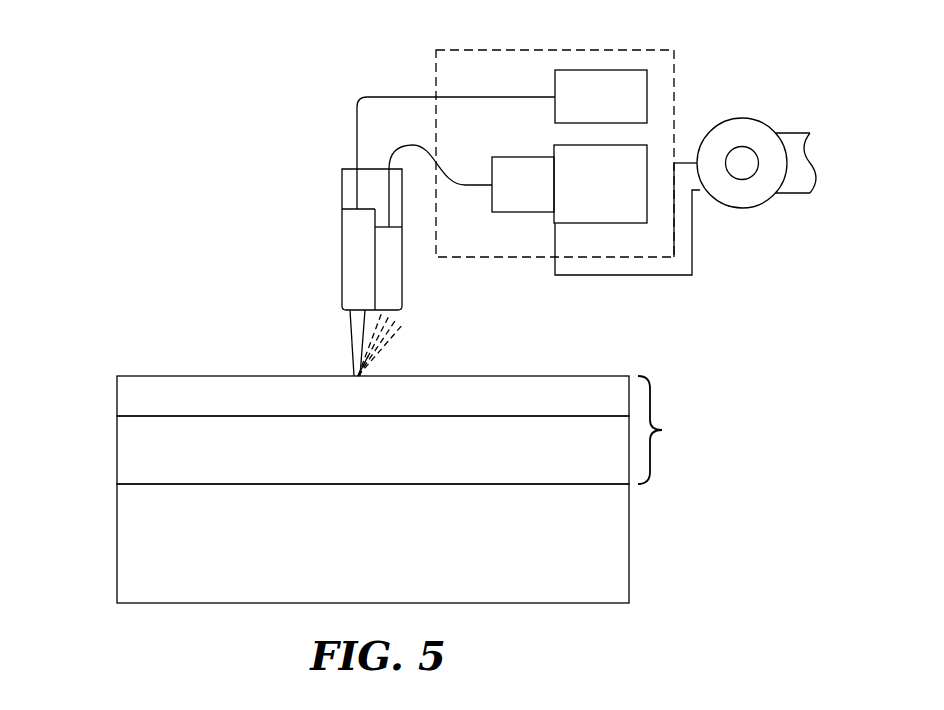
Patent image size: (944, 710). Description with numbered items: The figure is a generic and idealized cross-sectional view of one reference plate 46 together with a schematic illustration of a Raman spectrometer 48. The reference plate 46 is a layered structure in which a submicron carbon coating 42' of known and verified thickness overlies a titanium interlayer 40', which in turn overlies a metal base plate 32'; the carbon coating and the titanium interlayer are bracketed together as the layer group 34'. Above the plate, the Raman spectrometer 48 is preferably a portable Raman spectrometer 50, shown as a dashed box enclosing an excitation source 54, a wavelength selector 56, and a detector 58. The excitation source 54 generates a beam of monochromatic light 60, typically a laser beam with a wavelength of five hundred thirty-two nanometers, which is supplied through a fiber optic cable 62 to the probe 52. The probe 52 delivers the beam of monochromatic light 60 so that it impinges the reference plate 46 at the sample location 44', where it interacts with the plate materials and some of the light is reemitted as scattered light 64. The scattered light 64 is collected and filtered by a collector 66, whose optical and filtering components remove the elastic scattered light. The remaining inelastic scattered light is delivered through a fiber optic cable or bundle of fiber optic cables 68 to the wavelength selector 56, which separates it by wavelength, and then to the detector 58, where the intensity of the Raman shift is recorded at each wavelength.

The portable Raman spectrometer 50 is at (597, 138).
The excitation source 54 is at (601, 96).
The wavelength selector 56 is at (523, 184).
The detector 58 is at (600, 184).
The fiber optic cable 62 is at (412, 96).
The fiber optic cable or bundle of fiber optic cables 68 is at (440, 168).
The Raman spectrometer 48 is at (361, 226).
The probe 52 is at (342, 188).
The collector 66 is at (396, 278).
The beam of monochromatic light 60 is at (352, 333).
The scattered light 64 is at (404, 332).
The sample location 44' is at (393, 362).
The reference plate 46 is at (369, 473).
The submicron carbon coating 42' is at (373, 396).
The titanium interlayer 40' is at (373, 450).
The metal base plate 32' is at (373, 543).
The layer stack 34' is at (671, 430).